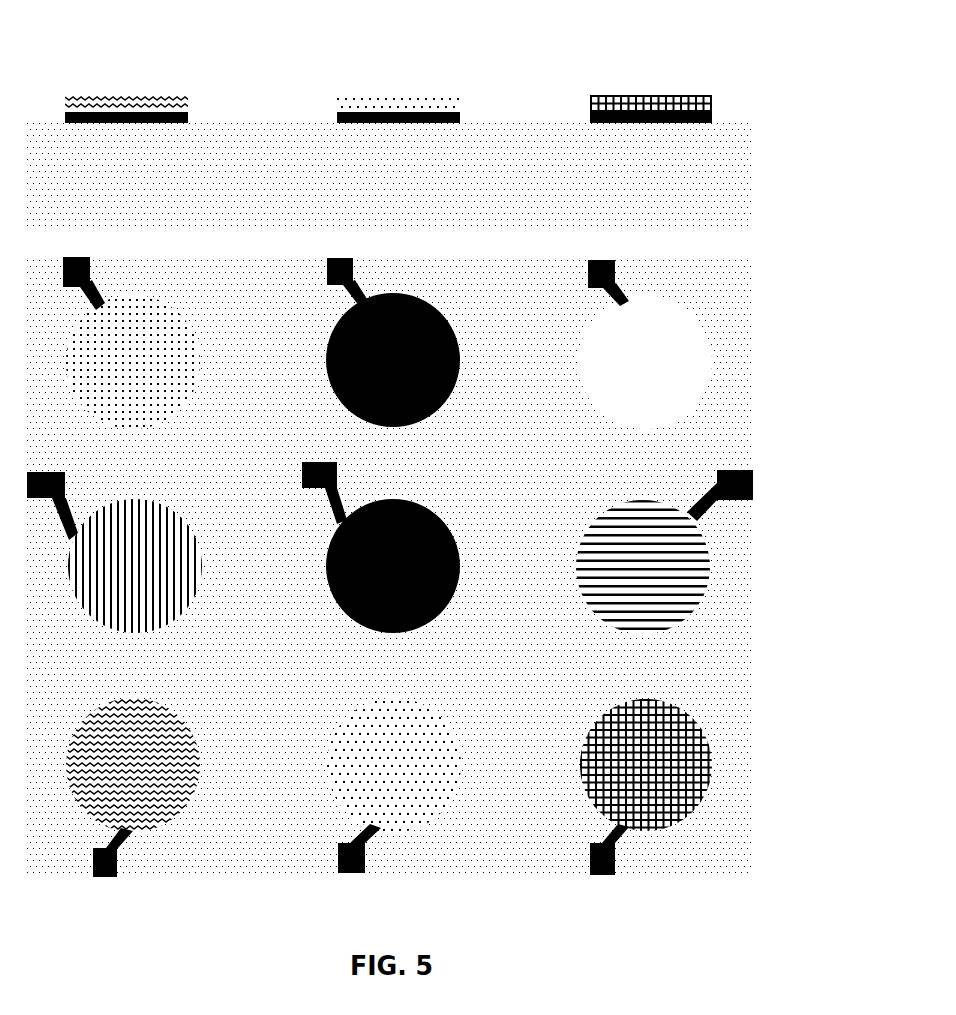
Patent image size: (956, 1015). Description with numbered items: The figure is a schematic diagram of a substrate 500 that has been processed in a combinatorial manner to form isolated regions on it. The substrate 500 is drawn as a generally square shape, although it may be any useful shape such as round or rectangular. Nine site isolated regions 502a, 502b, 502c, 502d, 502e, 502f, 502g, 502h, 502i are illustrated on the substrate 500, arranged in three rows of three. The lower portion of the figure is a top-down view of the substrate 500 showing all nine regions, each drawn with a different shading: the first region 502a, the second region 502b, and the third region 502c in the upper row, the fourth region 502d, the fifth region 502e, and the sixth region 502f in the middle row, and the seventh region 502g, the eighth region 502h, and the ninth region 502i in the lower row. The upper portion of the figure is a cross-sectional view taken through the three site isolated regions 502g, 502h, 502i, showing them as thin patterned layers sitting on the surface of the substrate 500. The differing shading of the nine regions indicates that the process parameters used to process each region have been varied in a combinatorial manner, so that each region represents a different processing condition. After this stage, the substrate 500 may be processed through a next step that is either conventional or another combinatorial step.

The substrate 500 is at (768, 180).
The site isolated region 502a is at (235, 302).
The site isolated region 502b is at (510, 302).
The site isolated region 502c is at (753, 302).
The site isolated region 502d is at (235, 496).
The site isolated region 502e is at (510, 496).
The site isolated region 502f is at (682, 486).
The site isolated region 502g is at (237, 700).
The site isolated region 502h is at (510, 699).
The site isolated region 502i is at (752, 698).